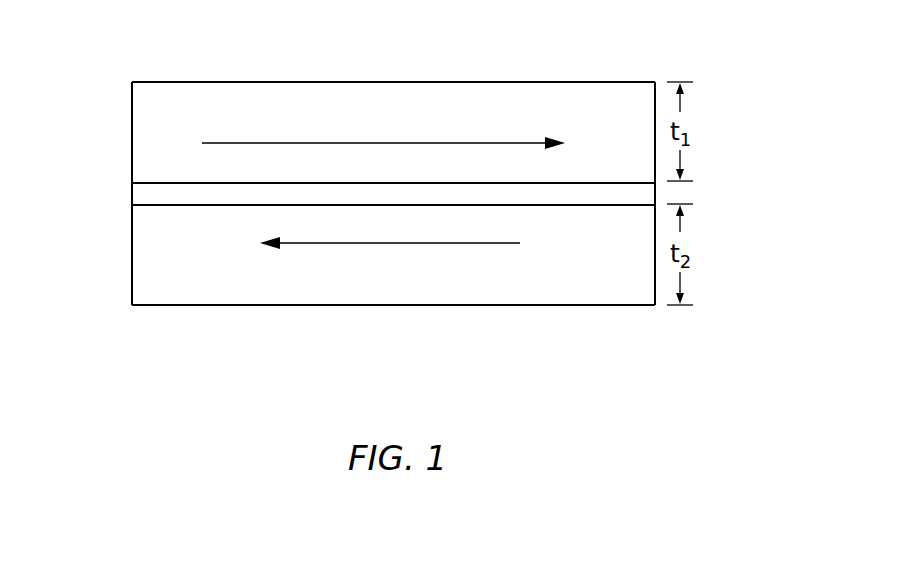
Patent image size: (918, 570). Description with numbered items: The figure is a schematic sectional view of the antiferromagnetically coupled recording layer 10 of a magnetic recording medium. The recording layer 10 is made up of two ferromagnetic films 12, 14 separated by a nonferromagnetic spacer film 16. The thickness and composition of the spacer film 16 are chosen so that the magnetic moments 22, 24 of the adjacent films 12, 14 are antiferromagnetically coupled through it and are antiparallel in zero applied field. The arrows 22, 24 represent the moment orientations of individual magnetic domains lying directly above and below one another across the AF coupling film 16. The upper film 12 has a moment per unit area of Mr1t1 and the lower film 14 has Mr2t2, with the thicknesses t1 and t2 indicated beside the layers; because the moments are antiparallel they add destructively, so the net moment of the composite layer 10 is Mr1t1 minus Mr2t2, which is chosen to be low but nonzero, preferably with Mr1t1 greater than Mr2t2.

The recording layer 10 is at (743, 132).
The ferromagnetic film 12 is at (157, 138).
The ferromagnetic film 14 is at (157, 267).
The nonferromagnetic spacer film 16 is at (157, 198).
The magnetic moment 22 is at (410, 143).
The magnetic moment 24 is at (412, 243).